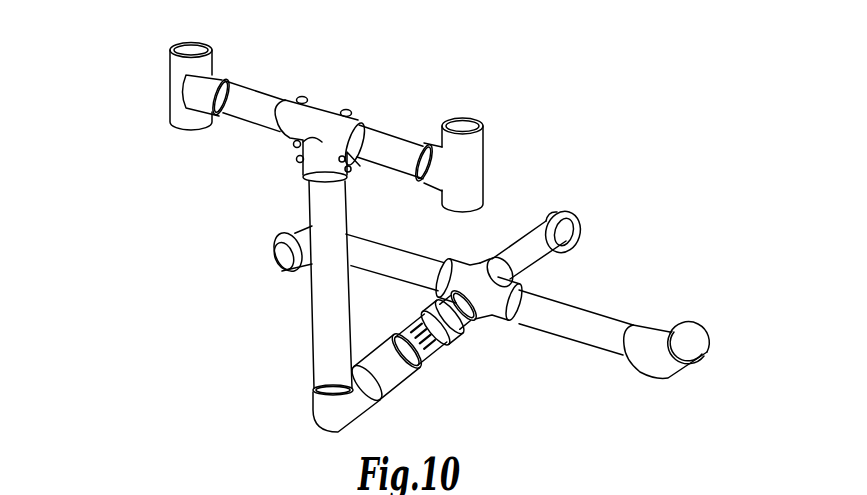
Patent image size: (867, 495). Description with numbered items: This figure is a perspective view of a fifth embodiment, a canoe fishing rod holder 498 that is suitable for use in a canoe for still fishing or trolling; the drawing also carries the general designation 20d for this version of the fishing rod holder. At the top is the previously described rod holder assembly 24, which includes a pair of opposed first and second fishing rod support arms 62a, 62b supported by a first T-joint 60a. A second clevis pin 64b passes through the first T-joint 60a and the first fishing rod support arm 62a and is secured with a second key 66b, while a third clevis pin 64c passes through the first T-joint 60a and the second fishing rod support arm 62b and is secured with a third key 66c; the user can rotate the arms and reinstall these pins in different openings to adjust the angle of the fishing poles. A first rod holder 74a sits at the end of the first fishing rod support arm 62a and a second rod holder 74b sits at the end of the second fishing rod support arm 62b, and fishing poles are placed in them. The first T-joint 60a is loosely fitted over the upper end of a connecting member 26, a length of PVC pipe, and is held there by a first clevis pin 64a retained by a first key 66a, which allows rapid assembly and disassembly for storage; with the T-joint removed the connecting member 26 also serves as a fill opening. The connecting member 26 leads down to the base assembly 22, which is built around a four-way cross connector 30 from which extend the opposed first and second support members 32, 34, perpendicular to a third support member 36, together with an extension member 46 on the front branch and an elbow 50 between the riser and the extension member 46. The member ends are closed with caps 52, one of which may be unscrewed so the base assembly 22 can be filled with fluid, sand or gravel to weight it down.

The canoe fishing rod holder 498 is at (345, 45).
The rod holder assembly 24 is at (365, 68).
The pipe frame assembly 20d is at (226, 277).
The base assembly 22 is at (558, 323).
The connecting member 26 is at (328, 343).
The four-way cross connector 30 is at (495, 308).
The first support member 32 is at (597, 327).
The second support member 34 is at (367, 263).
The third support member 36 is at (528, 252).
The extension member 46 is at (403, 362).
The elbow fitting 50 is at (367, 403).
The cap 52 is at (273, 265).
The first T-joint 60a is at (324, 112).
The first fishing rod support arm 62a is at (253, 92).
The second fishing rod support arm 62b is at (383, 138).
The first clevis pin 64a is at (350, 170).
The second clevis pin 64b is at (302, 97).
The third clevis pin 64c is at (346, 110).
The first key 66a is at (298, 162).
The second key 66b is at (294, 145).
The third key 66c is at (346, 160).
The first rod holder 74a is at (181, 77).
The second rod holder 74b is at (470, 160).